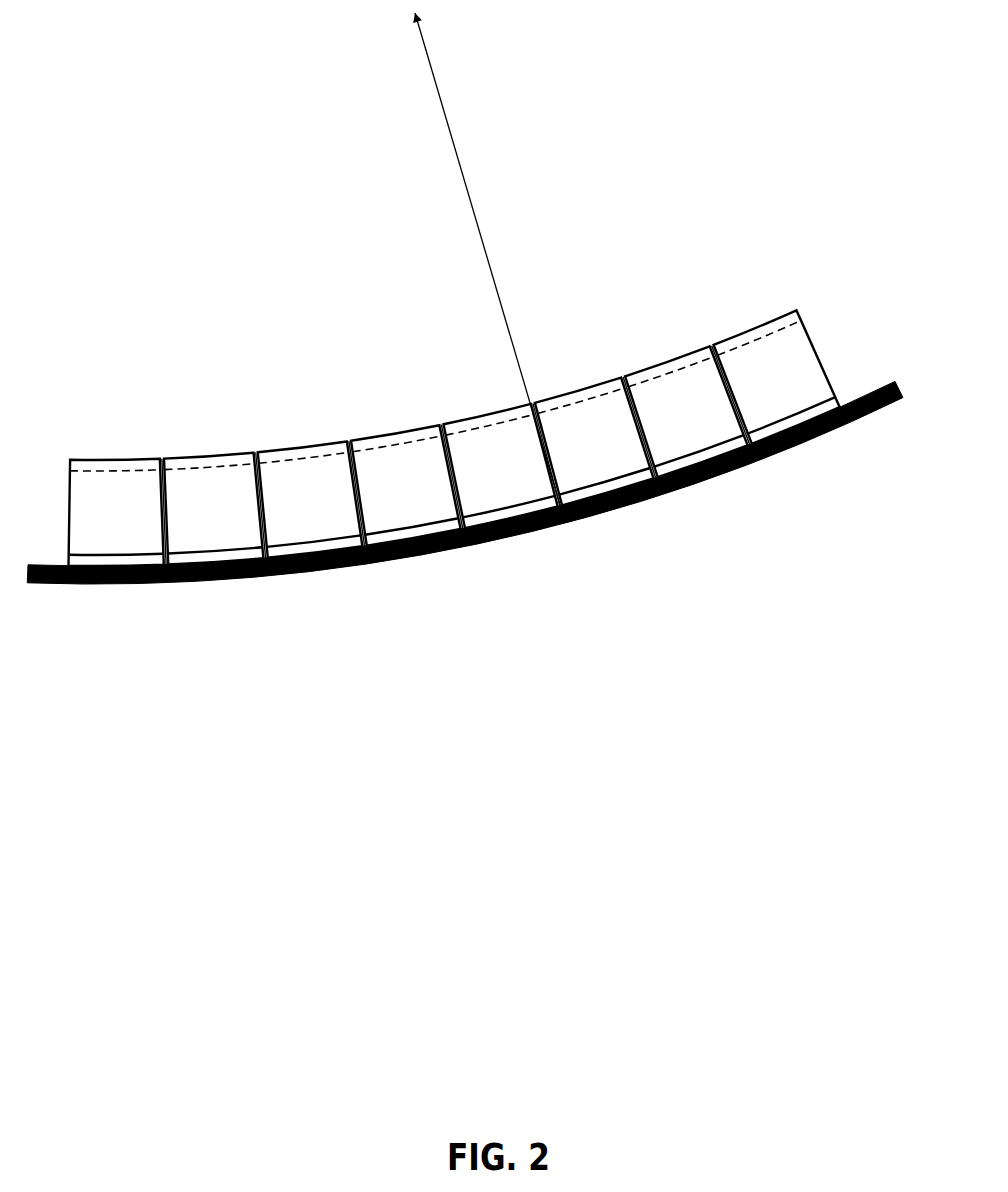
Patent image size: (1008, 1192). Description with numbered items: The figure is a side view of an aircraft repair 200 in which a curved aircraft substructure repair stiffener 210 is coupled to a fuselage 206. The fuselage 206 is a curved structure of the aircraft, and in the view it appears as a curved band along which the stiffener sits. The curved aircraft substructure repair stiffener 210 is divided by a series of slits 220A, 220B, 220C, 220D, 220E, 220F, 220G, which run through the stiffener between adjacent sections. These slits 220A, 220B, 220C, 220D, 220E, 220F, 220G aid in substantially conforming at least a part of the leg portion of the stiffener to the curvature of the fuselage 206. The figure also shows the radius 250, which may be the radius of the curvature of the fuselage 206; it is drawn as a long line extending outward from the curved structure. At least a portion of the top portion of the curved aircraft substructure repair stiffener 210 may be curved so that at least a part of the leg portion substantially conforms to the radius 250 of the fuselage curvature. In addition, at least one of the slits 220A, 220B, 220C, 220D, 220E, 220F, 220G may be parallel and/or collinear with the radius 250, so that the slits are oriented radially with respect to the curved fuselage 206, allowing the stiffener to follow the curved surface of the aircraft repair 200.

The aircraft repair 200 is at (195, 213).
The fuselage 206 is at (360, 572).
The curved aircraft substructure repair stiffener 210 is at (297, 448).
The slit 220A is at (161, 567).
The slit 220B is at (263, 562).
The slit 220C is at (348, 455).
The slit 220D is at (462, 532).
The slit 220E is at (561, 510).
The slit 220F is at (660, 479).
The slit 220G is at (753, 447).
The radius 250 is at (468, 193).